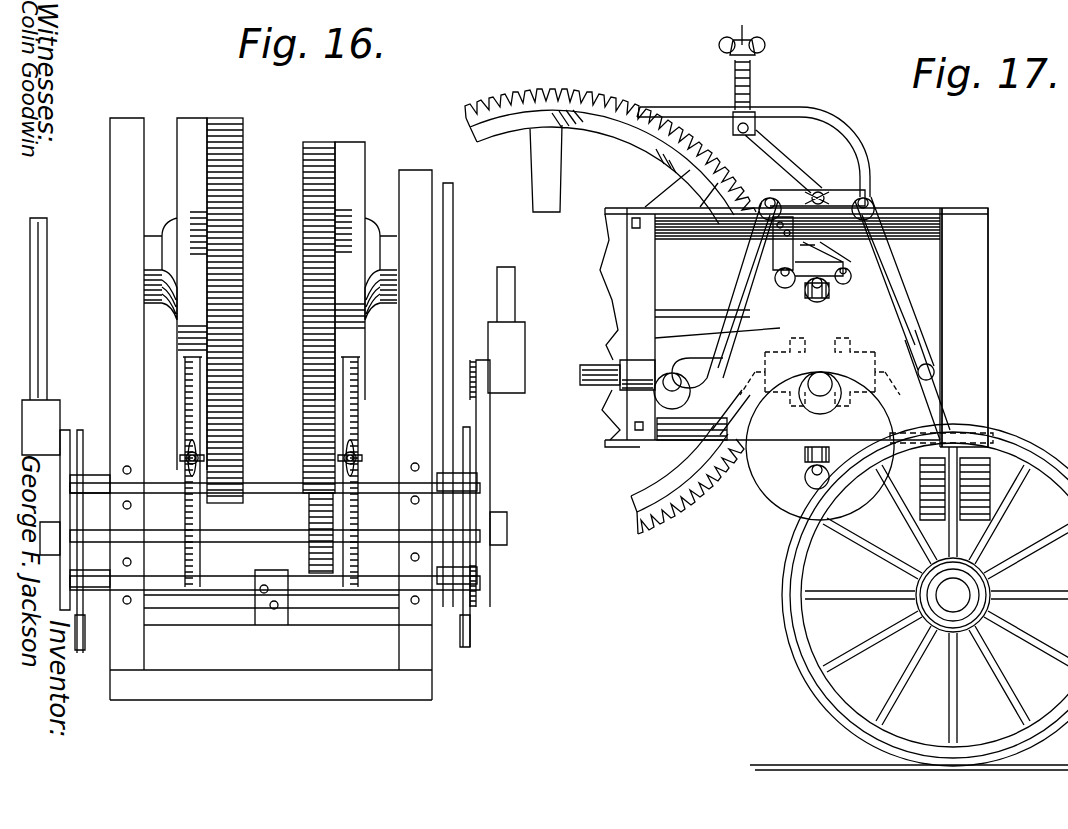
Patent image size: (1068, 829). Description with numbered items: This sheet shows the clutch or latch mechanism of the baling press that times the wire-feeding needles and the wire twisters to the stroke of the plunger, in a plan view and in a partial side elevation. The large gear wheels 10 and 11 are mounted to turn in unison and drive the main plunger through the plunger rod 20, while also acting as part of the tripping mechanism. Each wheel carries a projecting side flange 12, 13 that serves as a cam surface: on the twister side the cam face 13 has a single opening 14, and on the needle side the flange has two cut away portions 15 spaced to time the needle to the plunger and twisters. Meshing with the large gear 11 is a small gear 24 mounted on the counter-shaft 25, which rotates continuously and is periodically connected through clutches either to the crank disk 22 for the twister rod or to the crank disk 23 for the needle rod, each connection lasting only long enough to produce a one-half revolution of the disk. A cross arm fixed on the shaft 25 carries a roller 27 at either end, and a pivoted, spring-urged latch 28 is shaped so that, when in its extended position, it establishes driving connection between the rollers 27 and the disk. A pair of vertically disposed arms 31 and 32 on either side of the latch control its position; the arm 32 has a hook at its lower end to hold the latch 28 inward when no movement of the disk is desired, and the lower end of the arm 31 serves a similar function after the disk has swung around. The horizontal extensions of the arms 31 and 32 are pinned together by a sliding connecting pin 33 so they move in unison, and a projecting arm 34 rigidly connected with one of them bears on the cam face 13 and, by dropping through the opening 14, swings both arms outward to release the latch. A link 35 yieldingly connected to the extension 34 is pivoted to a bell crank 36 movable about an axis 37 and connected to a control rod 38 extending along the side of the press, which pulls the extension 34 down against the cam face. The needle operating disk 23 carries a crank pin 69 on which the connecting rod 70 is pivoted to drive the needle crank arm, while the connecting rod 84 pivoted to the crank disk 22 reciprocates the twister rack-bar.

In FIG. 16, the large gear wheel 10 is at (240, 340).
In FIG. 17, the large gear wheel 10 is at (594, 100).
In FIG. 16, the large gear wheel 11 is at (305, 415).
In FIG. 16, the side flange 12 is at (188, 178).
In FIG. 17, the side flange 12 is at (495, 125).
In FIG. 16, the side flange 13 is at (358, 192).
In FIG. 16, the opening 14 is at (352, 352).
In FIG. 16, the cut away portions 15 is at (183, 312).
In FIG. 17, the cut away portions 15 is at (660, 148).
In FIG. 17, the plunger rod 20 is at (717, 324).
In FIG. 16, the crank disk 22 is at (490, 456).
In FIG. 16, the crank disk 23 is at (63, 500).
In FIG. 17, the crank disk 23 is at (820, 416).
In FIG. 16, the small gear 24 is at (312, 552).
In FIG. 16, the counter-shaft 25 is at (258, 548).
In FIG. 17, the counter-shaft 25 is at (822, 385).
In FIG. 17, the roller 27 is at (812, 296).
In FIG. 17, the latch 28 is at (905, 345).
In FIG. 16, the arm 31 is at (84, 460).
In FIG. 17, the arm 31 is at (738, 287).
In FIG. 16, the arm 32 is at (82, 655).
In FIG. 17, the arm 32 is at (890, 290).
In FIG. 16, the sliding connecting pin 33 is at (100, 540).
In FIG. 17, the sliding connecting pin 33 is at (818, 192).
In FIG. 16, the projecting arm 34 is at (190, 515).
In FIG. 17, the projecting arm 34 is at (815, 110).
In FIG. 17, the link 35 is at (770, 160).
In FIG. 17, the bell crank 36 is at (850, 272).
In FIG. 17, the axis 37 is at (780, 268).
In FIG. 16, the control rod 38 is at (452, 258).
In FIG. 16, the crank pin 69 is at (26, 440).
In FIG. 17, the crank pin 69 is at (620, 398).
In FIG. 16, the connecting rod 70 is at (46, 312).
In FIG. 17, the connecting rod 70 is at (600, 372).
In FIG. 16, the connecting rod 84 is at (512, 296).